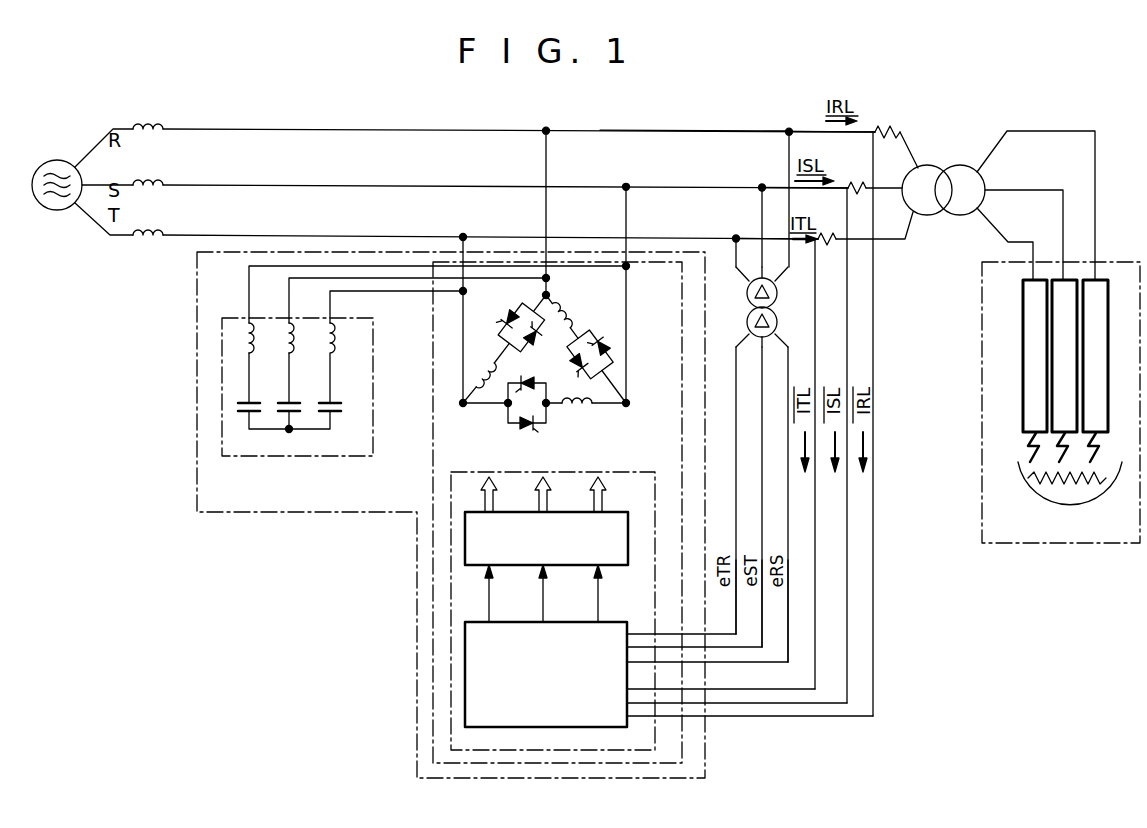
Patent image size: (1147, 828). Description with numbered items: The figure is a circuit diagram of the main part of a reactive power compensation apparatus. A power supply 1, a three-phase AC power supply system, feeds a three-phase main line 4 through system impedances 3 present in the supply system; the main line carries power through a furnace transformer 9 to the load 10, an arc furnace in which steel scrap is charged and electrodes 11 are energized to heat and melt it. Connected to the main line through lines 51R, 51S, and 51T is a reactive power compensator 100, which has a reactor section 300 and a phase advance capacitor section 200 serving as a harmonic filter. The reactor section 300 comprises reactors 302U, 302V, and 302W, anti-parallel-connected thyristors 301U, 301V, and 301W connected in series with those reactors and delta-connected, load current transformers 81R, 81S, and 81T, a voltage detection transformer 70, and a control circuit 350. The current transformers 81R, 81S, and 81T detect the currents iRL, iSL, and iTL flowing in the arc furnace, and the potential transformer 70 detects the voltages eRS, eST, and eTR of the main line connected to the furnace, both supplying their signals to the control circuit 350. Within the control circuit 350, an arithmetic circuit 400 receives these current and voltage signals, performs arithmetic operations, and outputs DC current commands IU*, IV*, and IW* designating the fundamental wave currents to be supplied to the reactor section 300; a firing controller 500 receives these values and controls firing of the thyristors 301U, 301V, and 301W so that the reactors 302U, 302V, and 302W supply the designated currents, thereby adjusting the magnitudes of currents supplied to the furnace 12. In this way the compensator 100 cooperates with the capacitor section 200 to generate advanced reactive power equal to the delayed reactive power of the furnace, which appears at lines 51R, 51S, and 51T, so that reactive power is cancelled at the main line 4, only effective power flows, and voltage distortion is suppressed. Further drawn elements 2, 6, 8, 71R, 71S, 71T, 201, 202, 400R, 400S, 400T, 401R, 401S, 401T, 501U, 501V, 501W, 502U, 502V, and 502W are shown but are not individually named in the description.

The power supply 1 is at (57, 160).
The source leads 2 is at (113, 128).
The system impedances 3 is at (143, 125).
The three-phase main line 4 is at (175, 128).
The bus line 6 is at (694, 129).
The load-side line 8 is at (808, 130).
The furnace transformer 9 is at (940, 150).
The load 10 is at (1061, 402).
The electrodes 11 is at (1108, 380).
The furnace 12 is at (1088, 505).
The line 51R is at (551, 158).
The line 51S is at (628, 205).
The line 51T is at (461, 237).
The potential transformer 70 is at (749, 464).
The current detection point R 71R is at (787, 129).
The current detection point S 71S is at (762, 185).
The current detection point T 71T is at (737, 236).
The current transformer 81R is at (896, 119).
The current transformer 81S is at (857, 182).
The current transformer 81T is at (834, 234).
The reactive power compensator 100 is at (417, 386).
The phase advance capacitor section 200 is at (271, 386).
The capacitors 201 is at (337, 417).
The reactor 202 is at (344, 335).
The reactor section 300 is at (601, 512).
The thyristor 301U is at (612, 352).
The thyristor 301V is at (528, 426).
The thyristor 301W is at (500, 317).
The reactor 302U is at (575, 318).
The reactor 302V is at (577, 406).
The reactor 302W is at (495, 362).
The control circuit 350 is at (601, 596).
The arithmetic circuit 400 is at (465, 685).
The voltage input R 400R is at (788, 512).
The voltage input S 400S is at (762, 512).
The voltage input T 400T is at (736, 512).
The current input R 401R is at (873, 368).
The current input S 401S is at (846, 366).
The current input T 401T is at (815, 352).
The firing controller 500 is at (465, 557).
The current reference U 501U is at (489, 592).
The current reference V 501V is at (543, 585).
The current reference W 501W is at (598, 585).
The firing angle signal U 502U is at (489, 477).
The firing angle signal V 502V is at (543, 477).
The firing angle signal W 502W is at (598, 477).